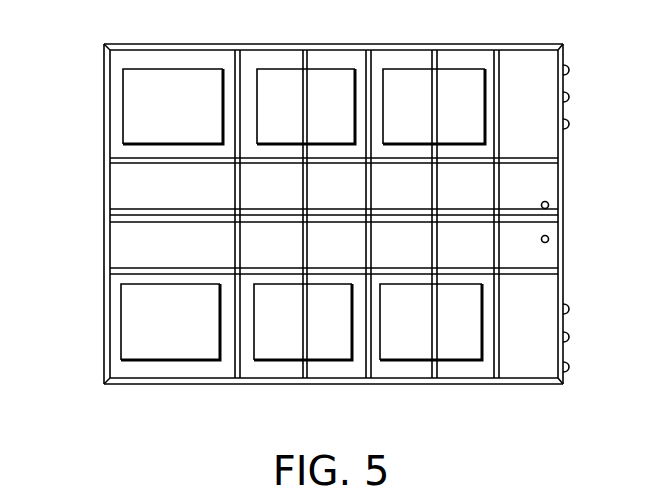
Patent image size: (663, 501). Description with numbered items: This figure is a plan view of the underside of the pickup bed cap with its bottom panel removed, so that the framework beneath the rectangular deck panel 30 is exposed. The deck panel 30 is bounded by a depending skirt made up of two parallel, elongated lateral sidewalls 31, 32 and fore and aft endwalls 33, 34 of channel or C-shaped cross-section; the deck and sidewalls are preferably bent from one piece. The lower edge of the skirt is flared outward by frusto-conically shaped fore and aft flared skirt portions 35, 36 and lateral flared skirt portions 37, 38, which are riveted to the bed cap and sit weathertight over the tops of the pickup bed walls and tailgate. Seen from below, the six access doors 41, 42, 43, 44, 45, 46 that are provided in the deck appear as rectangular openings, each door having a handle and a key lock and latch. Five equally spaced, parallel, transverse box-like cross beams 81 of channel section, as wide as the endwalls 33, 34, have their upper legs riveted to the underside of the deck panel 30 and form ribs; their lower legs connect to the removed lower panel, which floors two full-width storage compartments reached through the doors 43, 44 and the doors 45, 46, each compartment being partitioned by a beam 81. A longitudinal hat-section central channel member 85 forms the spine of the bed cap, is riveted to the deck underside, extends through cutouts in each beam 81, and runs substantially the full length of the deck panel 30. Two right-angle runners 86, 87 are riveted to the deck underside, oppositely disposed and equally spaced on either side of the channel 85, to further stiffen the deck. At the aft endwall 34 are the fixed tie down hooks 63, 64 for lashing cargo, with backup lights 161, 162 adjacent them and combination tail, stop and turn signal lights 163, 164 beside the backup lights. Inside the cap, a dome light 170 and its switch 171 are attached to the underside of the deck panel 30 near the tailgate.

The deck panel 30 is at (194, 197).
The lateral sidewall 31 is at (331, 52).
The lateral sidewall 32 is at (331, 376).
The fore endwall 33 is at (113, 207).
The aft endwall 34 is at (543, 181).
The fore flared skirt portion 35 is at (104, 132).
The aft flared skirt portion 36 is at (563, 158).
The lateral flared skirt portion 37 is at (366, 46).
The lateral flared skirt portion 38 is at (371, 385).
The access door 41 is at (183, 117).
The access door 42 is at (184, 334).
The access door 43 is at (293, 115).
The access door 44 is at (291, 334).
The access door 45 is at (473, 115).
The access door 46 is at (472, 336).
The tie down hook 63 is at (570, 127).
The tie down hook 64 is at (570, 308).
The cross beam 81 is at (238, 198).
The central channel member 85 is at (252, 225).
The angle runner 86 is at (147, 271).
The angle runner 87 is at (116, 161).
The backup light 161 is at (570, 97).
The backup light 162 is at (570, 337).
The combination tail light, stop light and turn signal 163 is at (570, 68).
The combination tail light, stop light and turn signal 164 is at (572, 367).
The dome light 170 is at (549, 205).
The switch 171 is at (548, 241).